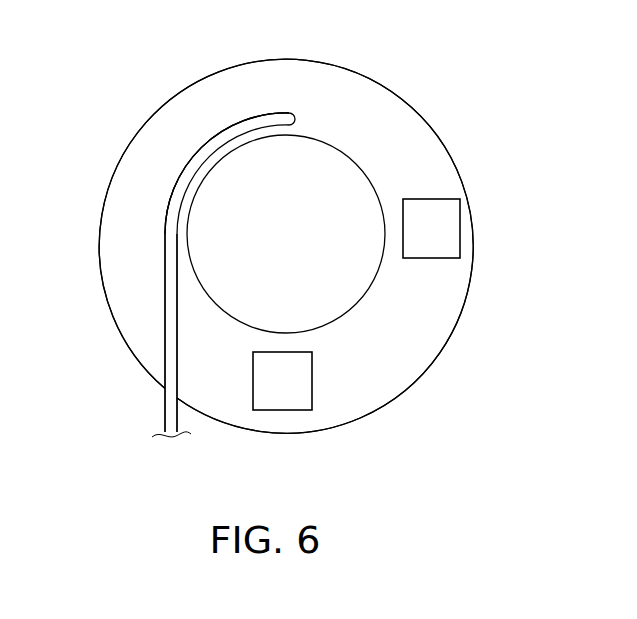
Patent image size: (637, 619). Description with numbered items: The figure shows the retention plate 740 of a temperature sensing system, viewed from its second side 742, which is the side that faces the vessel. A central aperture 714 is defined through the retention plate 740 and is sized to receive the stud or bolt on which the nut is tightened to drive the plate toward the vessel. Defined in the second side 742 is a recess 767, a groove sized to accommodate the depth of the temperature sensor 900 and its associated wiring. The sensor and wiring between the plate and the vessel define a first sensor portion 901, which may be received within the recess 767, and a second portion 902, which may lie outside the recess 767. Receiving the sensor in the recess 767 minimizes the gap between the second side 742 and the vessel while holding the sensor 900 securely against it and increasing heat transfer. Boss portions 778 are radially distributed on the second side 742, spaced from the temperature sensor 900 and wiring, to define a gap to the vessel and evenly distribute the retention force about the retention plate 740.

The retention plate 740 is at (183, 80).
The second side 742 is at (128, 193).
The aperture 714 is at (263, 246).
The recess 767 is at (190, 124).
The temperature sensor 900 is at (260, 103).
The first sensor portion 901 is at (175, 176).
The second portion 902 is at (163, 404).
The boss portions 778 is at (434, 231).